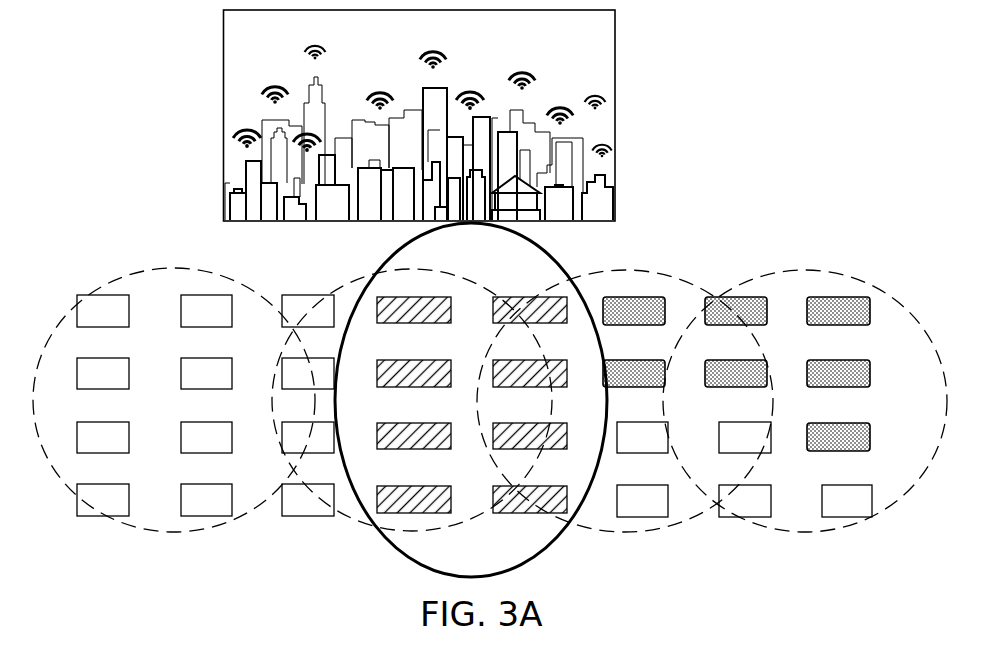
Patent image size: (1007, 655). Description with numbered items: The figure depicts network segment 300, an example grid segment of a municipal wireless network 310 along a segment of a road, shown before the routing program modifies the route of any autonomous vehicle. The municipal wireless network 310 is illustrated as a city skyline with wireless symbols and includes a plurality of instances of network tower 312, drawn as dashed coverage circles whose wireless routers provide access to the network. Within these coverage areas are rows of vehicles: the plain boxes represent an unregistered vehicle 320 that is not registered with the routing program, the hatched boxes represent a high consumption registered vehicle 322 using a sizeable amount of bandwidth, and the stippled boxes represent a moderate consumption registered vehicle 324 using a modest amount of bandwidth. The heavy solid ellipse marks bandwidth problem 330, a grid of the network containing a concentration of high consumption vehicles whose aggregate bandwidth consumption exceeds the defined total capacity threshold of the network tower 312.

The network segment 300 is at (780, 36).
The municipal wireless network 310 is at (587, 49).
The network tower 312 is at (143, 272).
The unregistered vehicle 320 is at (112, 503).
The high consumption registered vehicle 322 is at (418, 508).
The moderate consumption registered vehicle 324 is at (743, 297).
The bandwidth problem 330 is at (533, 558).